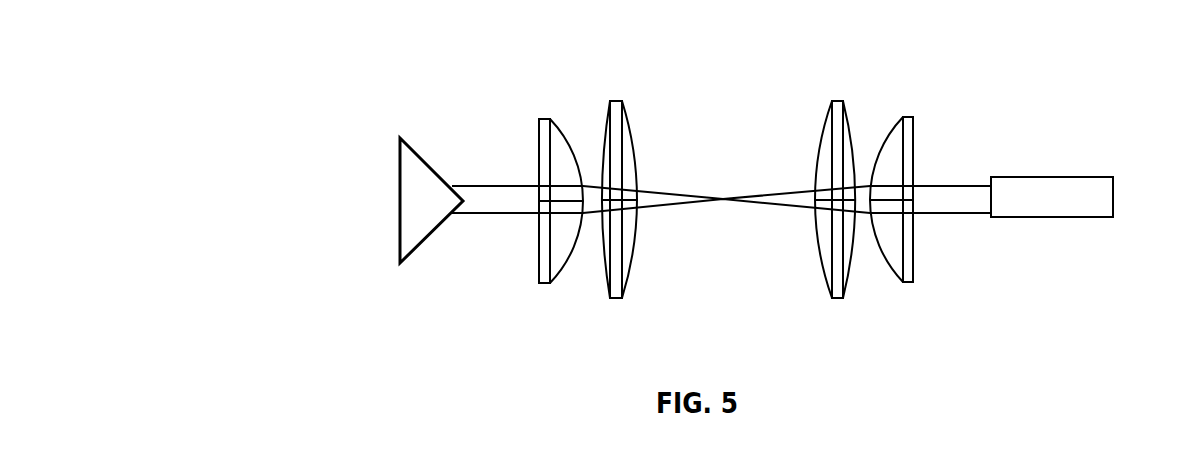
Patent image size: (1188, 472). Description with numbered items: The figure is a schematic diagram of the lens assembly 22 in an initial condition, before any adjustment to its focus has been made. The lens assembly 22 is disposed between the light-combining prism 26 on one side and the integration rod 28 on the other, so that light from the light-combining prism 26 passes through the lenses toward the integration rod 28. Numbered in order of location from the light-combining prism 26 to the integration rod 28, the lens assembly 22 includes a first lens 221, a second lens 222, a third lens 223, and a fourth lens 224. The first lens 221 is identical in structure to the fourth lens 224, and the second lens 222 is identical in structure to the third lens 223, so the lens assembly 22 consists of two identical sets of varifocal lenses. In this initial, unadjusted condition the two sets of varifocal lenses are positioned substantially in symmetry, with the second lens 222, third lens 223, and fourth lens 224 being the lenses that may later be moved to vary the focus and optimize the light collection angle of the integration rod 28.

The lens assembly 22 is at (243, 117).
The light-combining prism 26 is at (400, 226).
The first lens 221 is at (545, 119).
The second lens 222 is at (615, 101).
The third lens 223 is at (841, 101).
The fourth lens 224 is at (912, 117).
The integration rod 28 is at (1047, 177).